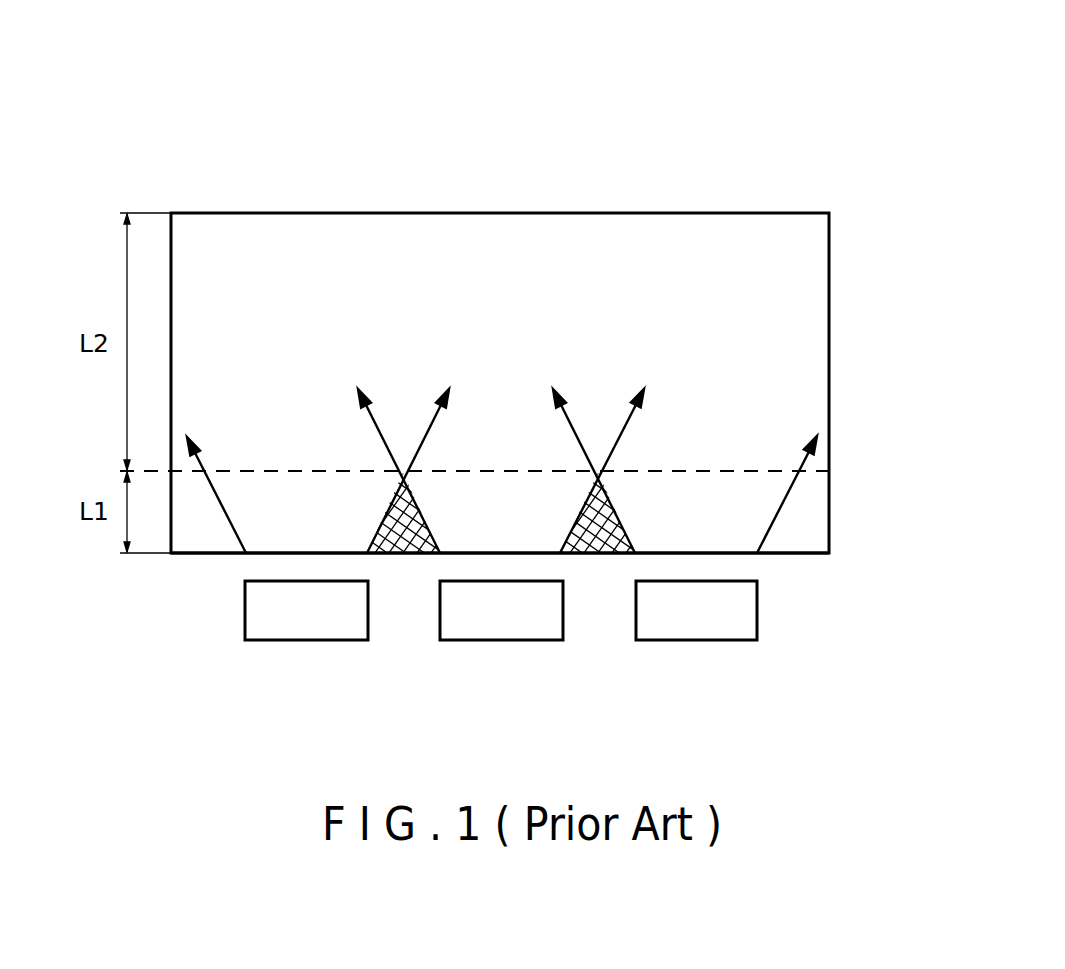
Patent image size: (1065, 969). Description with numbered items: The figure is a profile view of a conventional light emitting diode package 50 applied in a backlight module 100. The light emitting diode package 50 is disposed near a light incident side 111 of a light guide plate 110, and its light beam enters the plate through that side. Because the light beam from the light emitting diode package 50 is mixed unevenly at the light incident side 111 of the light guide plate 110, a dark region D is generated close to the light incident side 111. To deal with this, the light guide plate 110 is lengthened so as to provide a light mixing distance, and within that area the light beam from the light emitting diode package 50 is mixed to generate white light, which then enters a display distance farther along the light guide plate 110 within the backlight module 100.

The backlight module 100 is at (888, 138).
The light guide plate 110 is at (820, 315).
The light incident side 111 is at (810, 553).
The light emitting diode package 50 is at (682, 626).
The dark region D is at (595, 553).